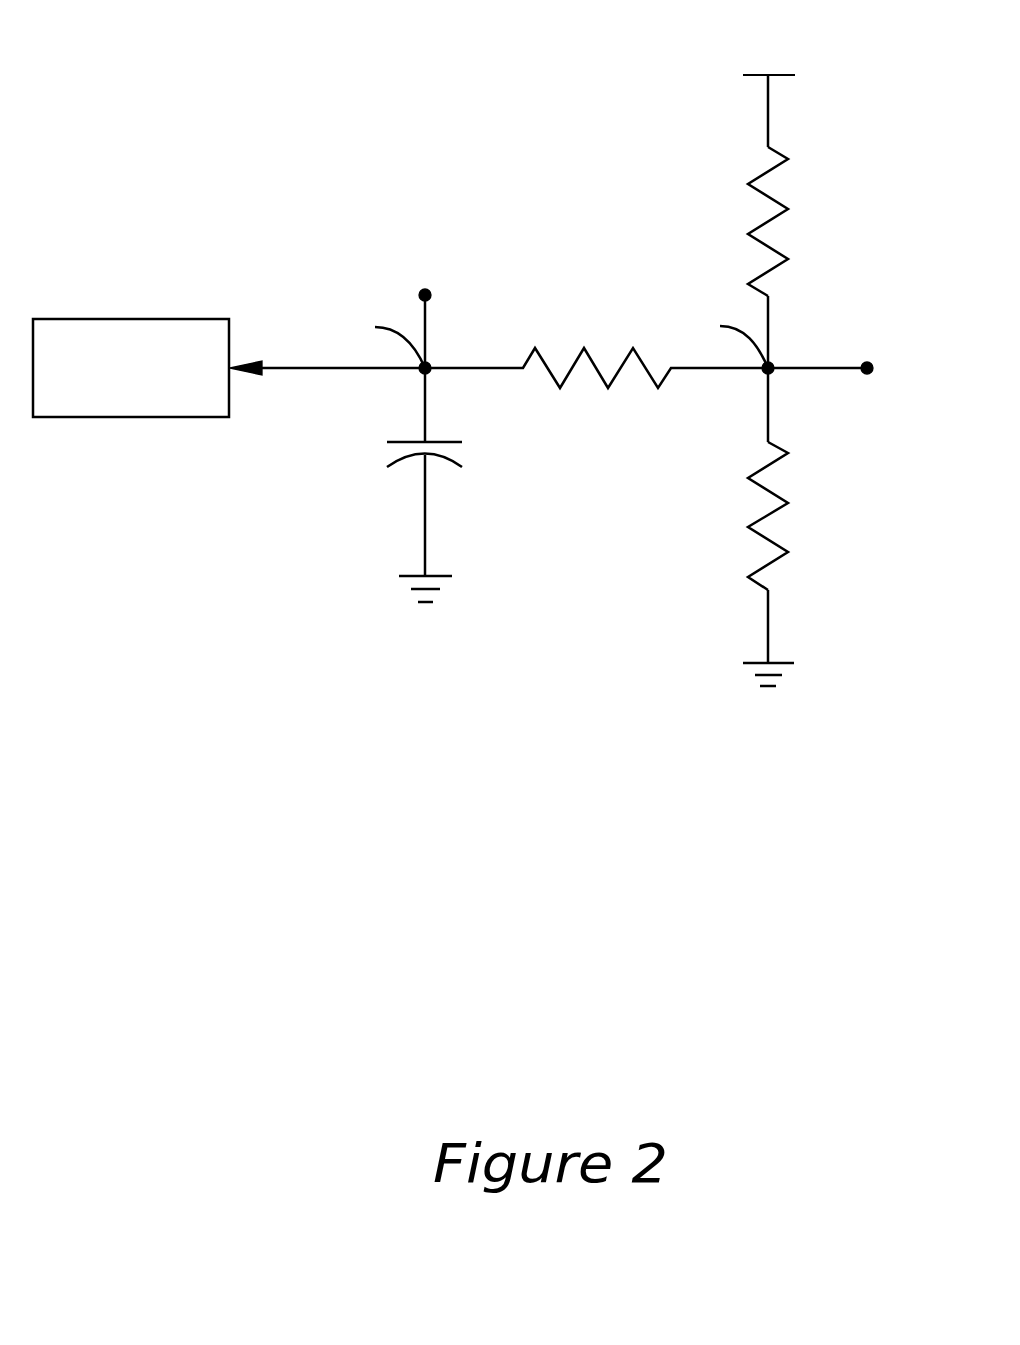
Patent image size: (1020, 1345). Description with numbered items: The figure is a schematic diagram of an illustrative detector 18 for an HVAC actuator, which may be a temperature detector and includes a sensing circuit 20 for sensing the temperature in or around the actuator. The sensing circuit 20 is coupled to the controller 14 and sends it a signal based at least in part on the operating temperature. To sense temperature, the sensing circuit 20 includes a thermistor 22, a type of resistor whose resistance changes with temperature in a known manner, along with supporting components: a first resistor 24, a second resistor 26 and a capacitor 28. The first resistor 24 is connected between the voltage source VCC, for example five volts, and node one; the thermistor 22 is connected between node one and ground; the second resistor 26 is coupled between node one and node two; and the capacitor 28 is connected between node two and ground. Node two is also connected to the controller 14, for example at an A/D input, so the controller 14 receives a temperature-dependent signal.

The controller 14 is at (130, 319).
The detector 18 is at (322, 100).
The sensing circuit 20 is at (597, 185).
The thermistor 22 is at (788, 503).
The first resistor 24 is at (788, 207).
The second resistor 26 is at (608, 388).
The capacitor 28 is at (400, 452).